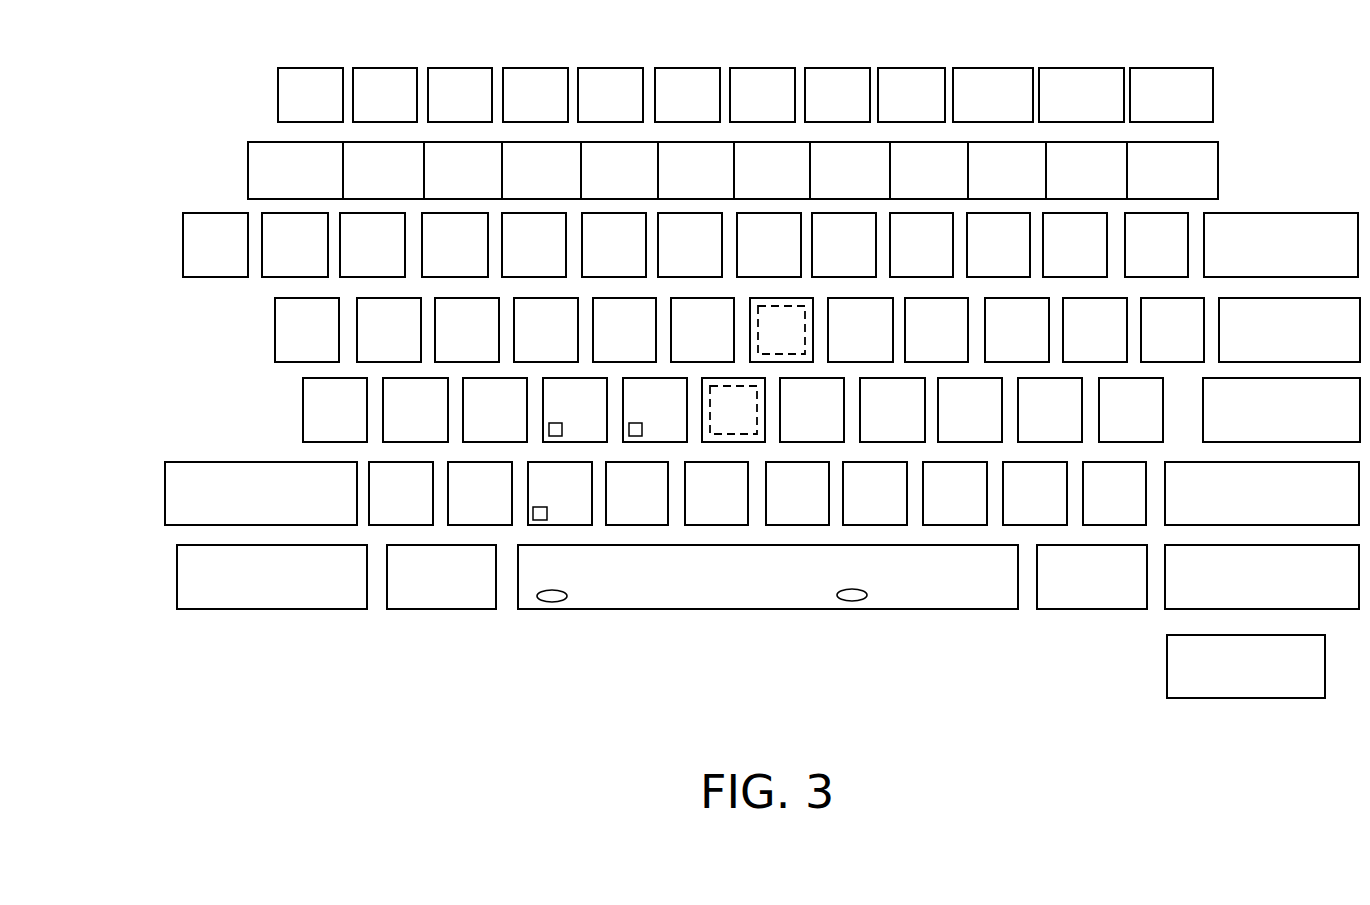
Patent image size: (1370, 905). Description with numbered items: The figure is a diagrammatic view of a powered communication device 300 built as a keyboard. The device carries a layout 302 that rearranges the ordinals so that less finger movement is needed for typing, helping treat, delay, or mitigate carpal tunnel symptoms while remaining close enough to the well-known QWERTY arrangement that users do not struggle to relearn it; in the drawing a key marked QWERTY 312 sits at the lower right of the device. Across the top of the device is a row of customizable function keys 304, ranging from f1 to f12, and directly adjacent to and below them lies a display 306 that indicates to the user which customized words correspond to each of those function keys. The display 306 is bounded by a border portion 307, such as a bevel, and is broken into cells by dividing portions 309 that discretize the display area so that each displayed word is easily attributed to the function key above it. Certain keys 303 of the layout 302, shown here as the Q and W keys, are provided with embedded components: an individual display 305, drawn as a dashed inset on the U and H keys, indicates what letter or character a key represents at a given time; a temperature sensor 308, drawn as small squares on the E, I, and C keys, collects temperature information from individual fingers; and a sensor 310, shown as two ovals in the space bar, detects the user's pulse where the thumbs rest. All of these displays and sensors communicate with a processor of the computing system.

The powered communication device 300 is at (323, 652).
The layout 302 is at (230, 325).
The keys 303 is at (368, 350).
The customizable function keys 304 is at (245, 92).
The individual display 305 is at (813, 340).
The display 306 is at (220, 168).
The border portion 307 is at (1213, 143).
The temperature sensor 308 is at (635, 437).
The dividing portions 309 is at (1126, 172).
The sensor 310 is at (559, 602).
The QWERTY layout indicator key 312 is at (1267, 685).